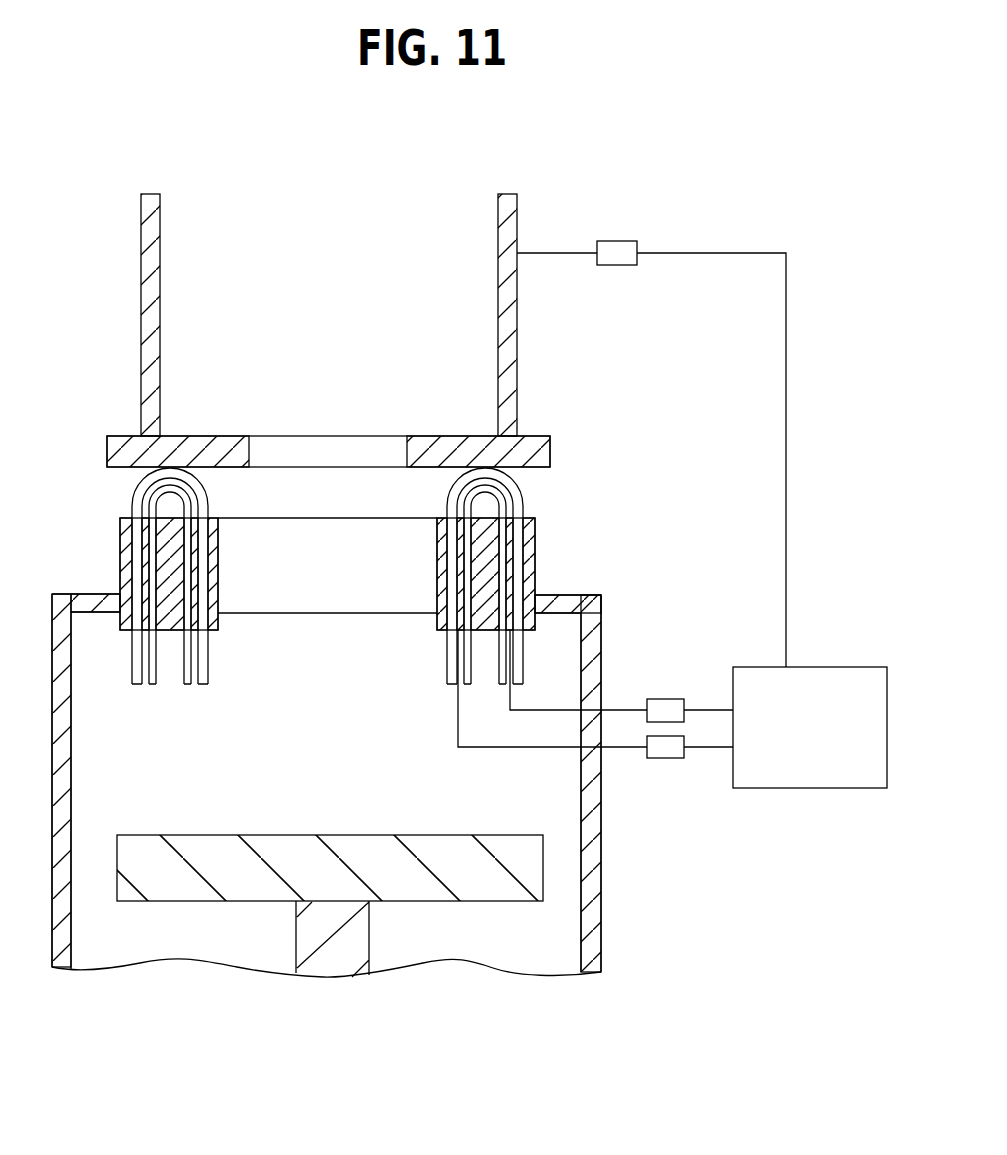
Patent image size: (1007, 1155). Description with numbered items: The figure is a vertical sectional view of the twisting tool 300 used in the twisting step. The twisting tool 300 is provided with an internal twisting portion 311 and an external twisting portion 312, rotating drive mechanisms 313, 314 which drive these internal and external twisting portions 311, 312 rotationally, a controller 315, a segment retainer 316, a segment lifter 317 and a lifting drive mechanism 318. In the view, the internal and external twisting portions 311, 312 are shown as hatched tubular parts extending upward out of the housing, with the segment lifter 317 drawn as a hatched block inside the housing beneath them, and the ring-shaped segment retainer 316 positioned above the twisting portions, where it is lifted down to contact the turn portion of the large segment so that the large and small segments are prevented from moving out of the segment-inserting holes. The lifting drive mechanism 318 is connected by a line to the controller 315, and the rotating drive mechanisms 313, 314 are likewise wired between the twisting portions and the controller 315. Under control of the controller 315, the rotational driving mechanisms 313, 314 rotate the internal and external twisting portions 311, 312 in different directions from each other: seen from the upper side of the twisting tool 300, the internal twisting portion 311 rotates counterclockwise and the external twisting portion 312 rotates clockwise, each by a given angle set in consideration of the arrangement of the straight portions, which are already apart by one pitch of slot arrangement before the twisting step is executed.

The twisting tool 300 is at (598, 392).
The internal twisting portion 311 is at (213, 623).
The external twisting portion 312 is at (123, 623).
The rotating drive mechanism 313 is at (663, 705).
The rotating drive mechanism 314 is at (665, 750).
The controller 315 is at (828, 665).
The segment retainer 316 is at (550, 455).
The segment lifter 317 is at (533, 868).
The lifting drive mechanism 318 is at (617, 241).